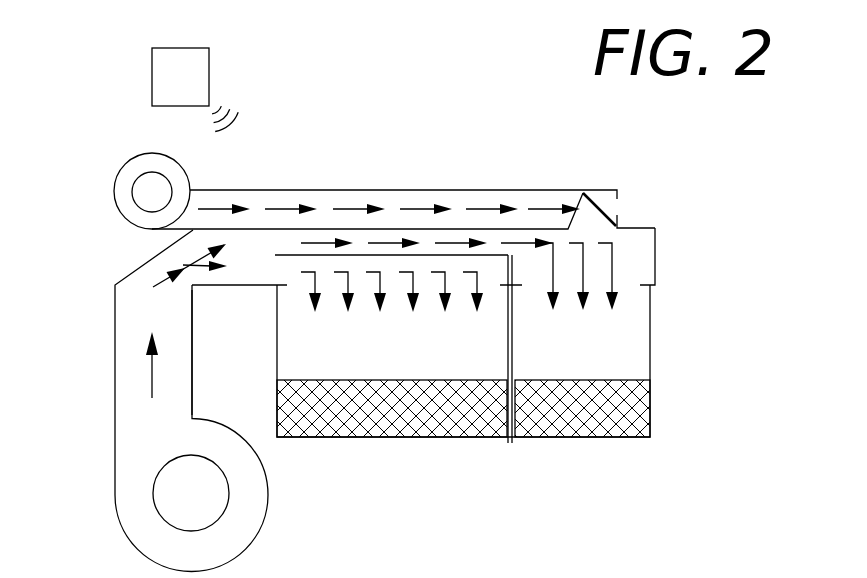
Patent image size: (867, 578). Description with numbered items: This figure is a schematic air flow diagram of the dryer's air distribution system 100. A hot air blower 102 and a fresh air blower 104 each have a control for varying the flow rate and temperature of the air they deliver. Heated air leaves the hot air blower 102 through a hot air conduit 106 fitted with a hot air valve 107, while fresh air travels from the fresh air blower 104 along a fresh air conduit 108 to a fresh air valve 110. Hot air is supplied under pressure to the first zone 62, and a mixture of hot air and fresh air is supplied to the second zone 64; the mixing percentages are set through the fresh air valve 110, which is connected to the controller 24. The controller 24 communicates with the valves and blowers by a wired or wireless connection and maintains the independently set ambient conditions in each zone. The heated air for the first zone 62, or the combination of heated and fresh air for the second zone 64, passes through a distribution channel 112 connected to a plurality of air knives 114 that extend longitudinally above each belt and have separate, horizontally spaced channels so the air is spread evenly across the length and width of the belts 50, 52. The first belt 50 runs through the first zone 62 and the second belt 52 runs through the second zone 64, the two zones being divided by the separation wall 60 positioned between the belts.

The controller 24 is at (193, 72).
The air distribution system 100 is at (492, 165).
The hot air blower 102 is at (120, 523).
The fresh air blower 104 is at (115, 170).
The hot air conduit 106 is at (135, 360).
The hot air valve 107 is at (257, 230).
The fresh air conduit 108 is at (256, 200).
The fresh air valve 110 is at (610, 210).
The distribution channel 112 is at (357, 275).
The air knives 114 is at (315, 283).
The first belt 50 is at (398, 413).
The second belt 52 is at (578, 425).
The separation wall 60 is at (508, 438).
The first zone 62 is at (327, 368).
The second zone 64 is at (635, 308).